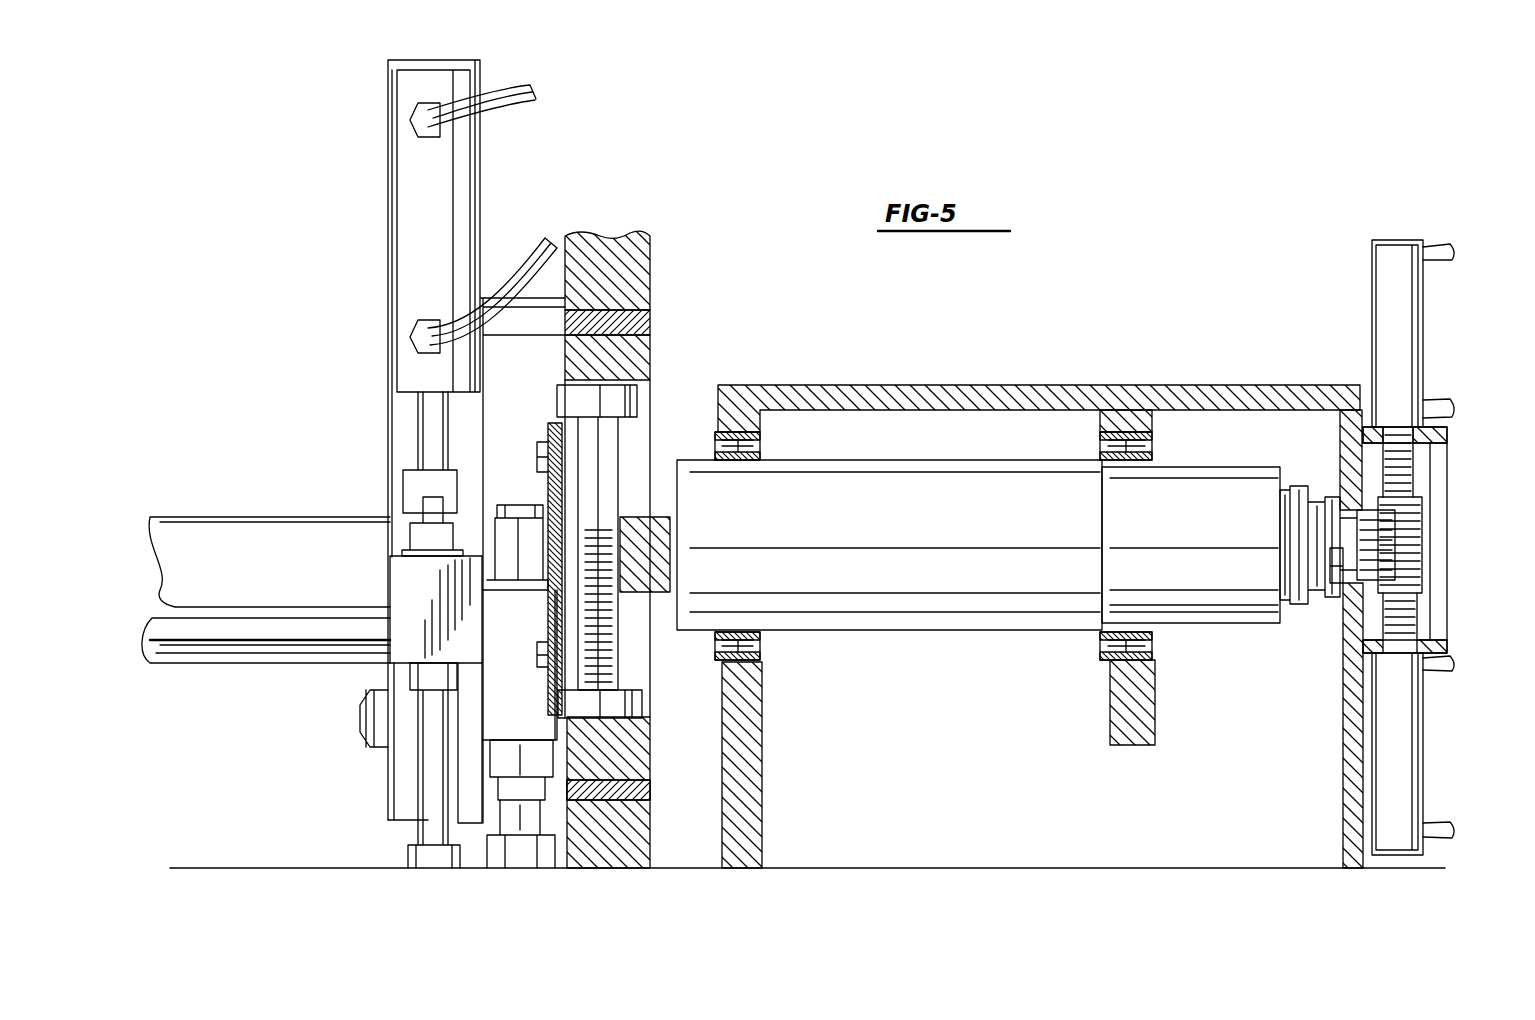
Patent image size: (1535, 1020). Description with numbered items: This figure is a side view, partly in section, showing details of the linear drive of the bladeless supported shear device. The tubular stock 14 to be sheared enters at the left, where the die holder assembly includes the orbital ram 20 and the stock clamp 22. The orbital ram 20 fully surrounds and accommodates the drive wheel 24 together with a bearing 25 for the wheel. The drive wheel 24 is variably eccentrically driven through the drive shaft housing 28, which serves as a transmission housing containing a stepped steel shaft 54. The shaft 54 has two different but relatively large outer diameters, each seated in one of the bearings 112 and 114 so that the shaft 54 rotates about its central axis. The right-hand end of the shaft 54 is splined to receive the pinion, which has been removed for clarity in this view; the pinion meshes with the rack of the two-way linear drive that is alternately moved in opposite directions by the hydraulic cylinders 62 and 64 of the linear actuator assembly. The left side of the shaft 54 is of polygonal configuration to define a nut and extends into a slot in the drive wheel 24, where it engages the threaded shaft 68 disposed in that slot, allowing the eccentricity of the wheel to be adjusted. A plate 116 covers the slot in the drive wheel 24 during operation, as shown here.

The tubular stock 14 is at (318, 537).
The orbital ram 20 is at (652, 262).
The stock clamp 22 is at (388, 205).
The drive wheel 24 is at (652, 348).
The bearing 25 is at (652, 323).
The drive shaft housing 28 is at (1168, 385).
The shaft 54 is at (985, 635).
The hydraulic cylinder 62 is at (1372, 257).
The hydraulic cylinder 64 is at (1425, 752).
The threaded shaft 68 is at (618, 650).
The bearing 112 is at (758, 640).
The bearing 114 is at (1152, 648).
The plate 116 is at (548, 430).